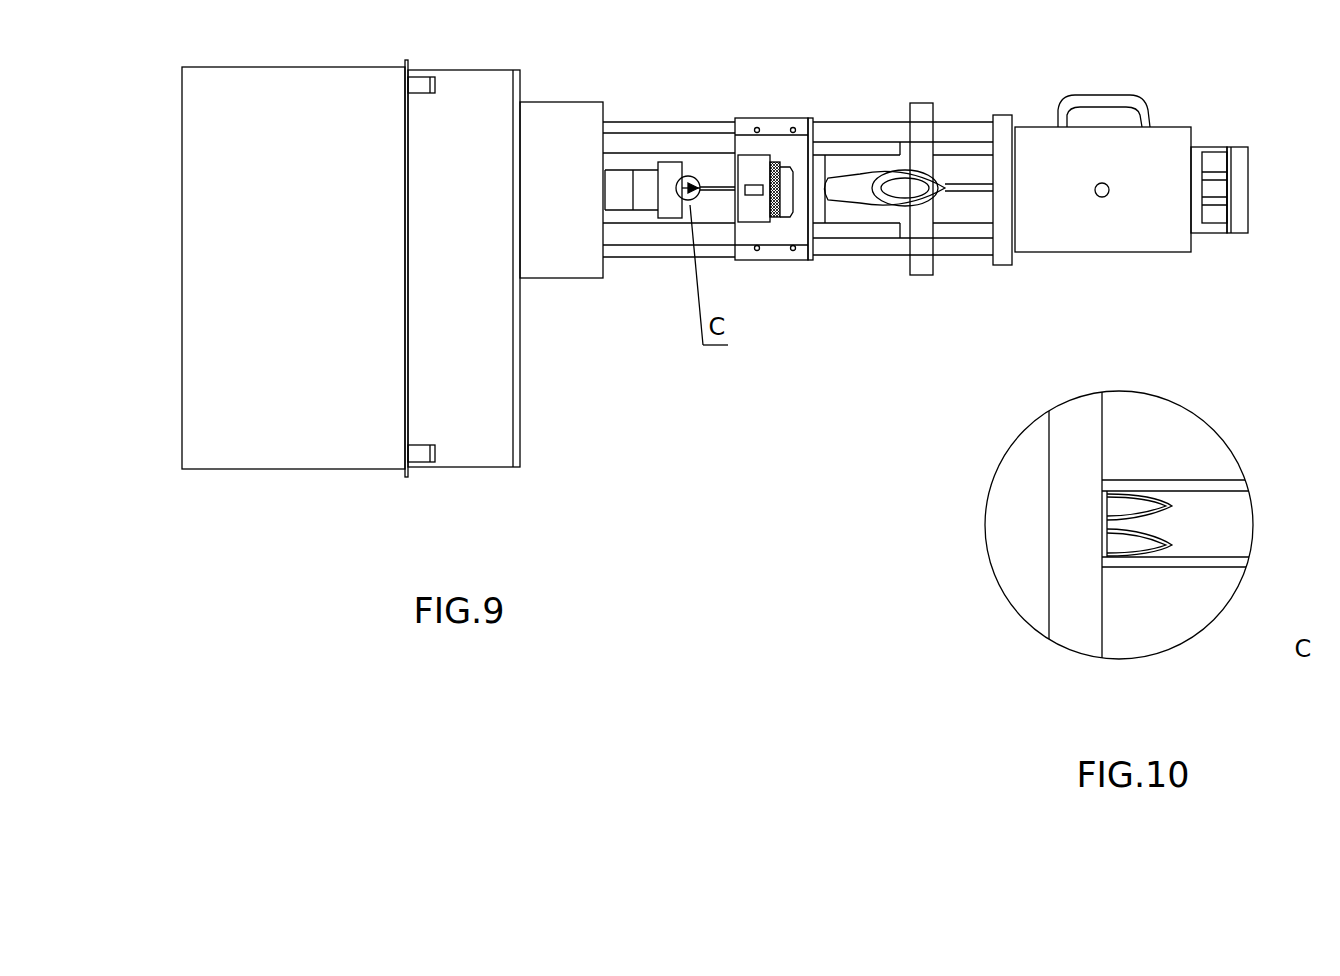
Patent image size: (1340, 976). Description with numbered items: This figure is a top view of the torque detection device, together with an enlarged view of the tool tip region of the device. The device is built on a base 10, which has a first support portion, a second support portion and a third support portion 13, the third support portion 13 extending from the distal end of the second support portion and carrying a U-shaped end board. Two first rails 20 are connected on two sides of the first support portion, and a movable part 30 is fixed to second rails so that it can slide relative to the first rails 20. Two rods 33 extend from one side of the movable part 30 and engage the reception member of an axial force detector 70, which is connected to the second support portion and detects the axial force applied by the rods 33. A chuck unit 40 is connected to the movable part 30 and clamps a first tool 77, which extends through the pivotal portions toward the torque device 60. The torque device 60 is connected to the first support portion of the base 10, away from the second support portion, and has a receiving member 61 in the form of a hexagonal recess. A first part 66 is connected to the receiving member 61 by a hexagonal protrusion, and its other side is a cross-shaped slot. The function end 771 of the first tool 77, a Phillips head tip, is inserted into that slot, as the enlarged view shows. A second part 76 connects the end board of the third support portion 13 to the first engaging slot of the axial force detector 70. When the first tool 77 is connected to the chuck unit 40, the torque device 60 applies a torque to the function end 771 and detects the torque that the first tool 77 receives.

In FIG. 9, the base 10 is at (846, 258).
In FIG. 9, the third support portion 13 is at (1238, 217).
In FIG. 9, the first rails 20 is at (652, 233).
In FIG. 9, the movable part 30 is at (806, 260).
In FIG. 9, the rods 33 is at (955, 250).
In FIG. 9, the chuck unit 40 is at (752, 172).
In FIG. 9, the torque device 60 is at (373, 469).
In FIG. 9, the receiving member 61 is at (643, 180).
In FIG. 9, the first part 66 is at (677, 176).
In FIG. 10, the first part 66 is at (1070, 615).
In FIG. 9, the axial force detector 70 is at (1094, 150).
In FIG. 9, the second part 76 is at (1197, 167).
In FIG. 9, the first tool 77 is at (870, 182).
In FIG. 10, the function end 771 is at (1123, 498).